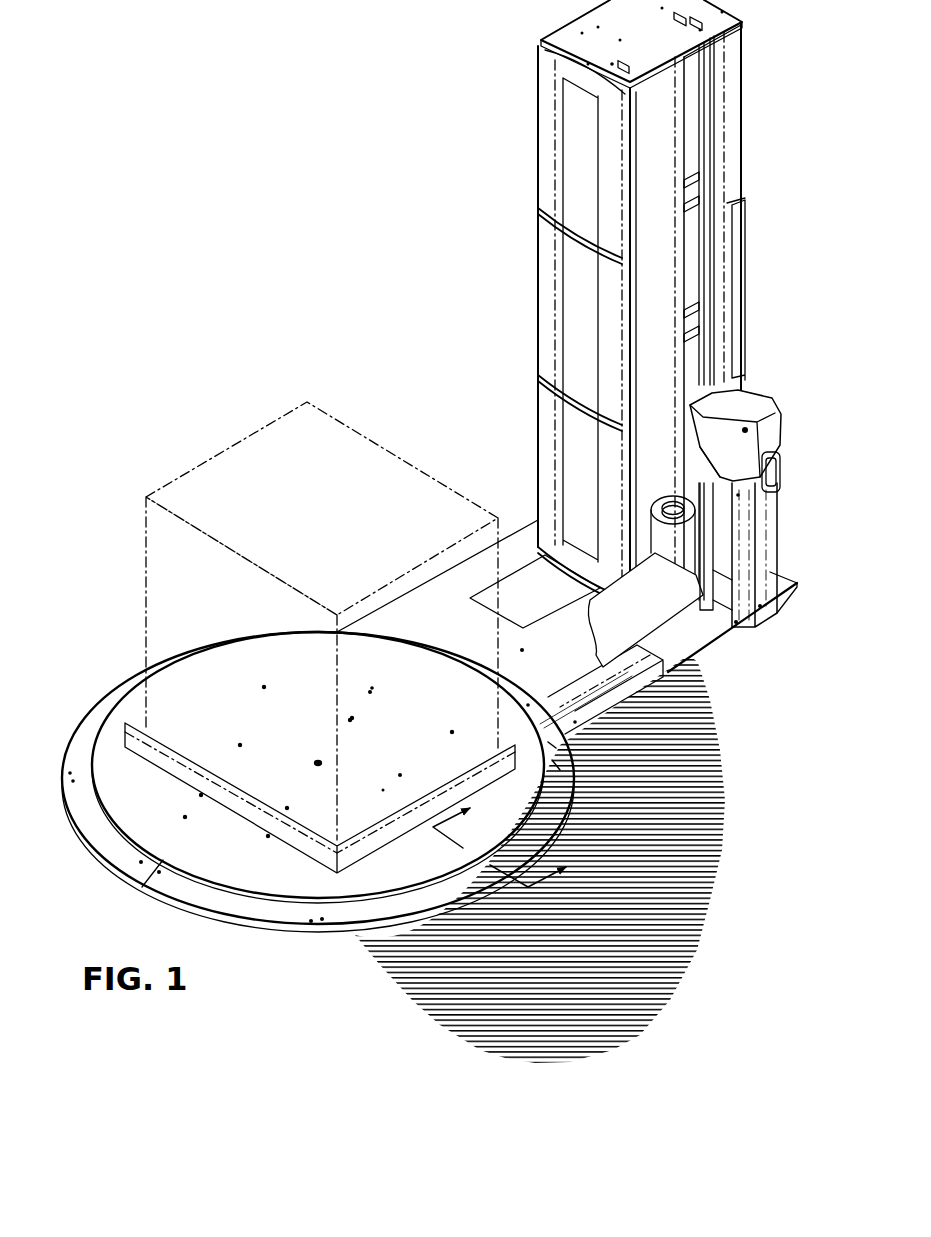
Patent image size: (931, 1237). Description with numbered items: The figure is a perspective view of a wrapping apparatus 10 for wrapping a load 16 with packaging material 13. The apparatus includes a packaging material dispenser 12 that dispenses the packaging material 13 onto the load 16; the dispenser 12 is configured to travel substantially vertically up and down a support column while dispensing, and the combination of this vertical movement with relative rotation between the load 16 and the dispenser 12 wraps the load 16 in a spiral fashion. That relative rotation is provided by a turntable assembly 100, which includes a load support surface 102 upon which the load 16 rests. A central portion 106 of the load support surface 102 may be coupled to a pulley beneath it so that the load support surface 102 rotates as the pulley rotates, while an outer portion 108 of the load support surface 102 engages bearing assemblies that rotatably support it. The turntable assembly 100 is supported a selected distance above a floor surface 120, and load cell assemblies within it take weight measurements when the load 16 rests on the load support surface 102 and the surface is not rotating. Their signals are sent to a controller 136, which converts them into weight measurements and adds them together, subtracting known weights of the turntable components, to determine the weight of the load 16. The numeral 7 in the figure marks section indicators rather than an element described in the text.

The wrapping apparatus 10 is at (319, 156).
The controller 136 is at (744, 159).
The packaging material dispenser 12 is at (768, 394).
The packaging material 13 is at (645, 603).
The load 16 is at (196, 463).
The turntable assembly 100 is at (338, 824).
The load support surface 102 is at (180, 847).
The central portion 106 is at (315, 749).
The outer portion 108 is at (520, 797).
The floor surface 120 is at (540, 861).
The section line 7- 7 is at (511, 850).